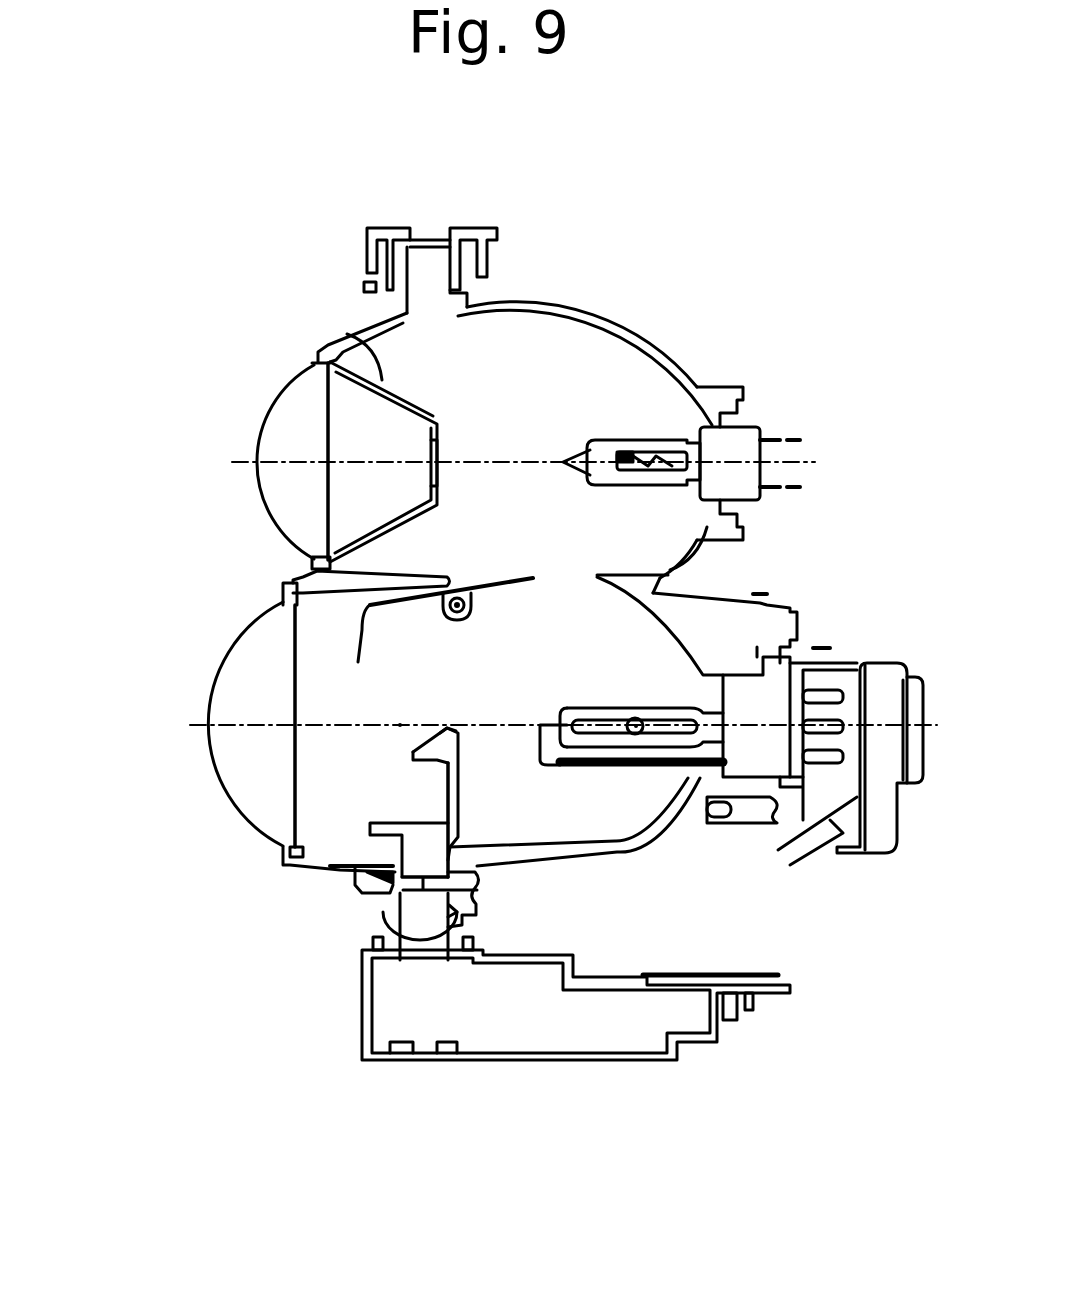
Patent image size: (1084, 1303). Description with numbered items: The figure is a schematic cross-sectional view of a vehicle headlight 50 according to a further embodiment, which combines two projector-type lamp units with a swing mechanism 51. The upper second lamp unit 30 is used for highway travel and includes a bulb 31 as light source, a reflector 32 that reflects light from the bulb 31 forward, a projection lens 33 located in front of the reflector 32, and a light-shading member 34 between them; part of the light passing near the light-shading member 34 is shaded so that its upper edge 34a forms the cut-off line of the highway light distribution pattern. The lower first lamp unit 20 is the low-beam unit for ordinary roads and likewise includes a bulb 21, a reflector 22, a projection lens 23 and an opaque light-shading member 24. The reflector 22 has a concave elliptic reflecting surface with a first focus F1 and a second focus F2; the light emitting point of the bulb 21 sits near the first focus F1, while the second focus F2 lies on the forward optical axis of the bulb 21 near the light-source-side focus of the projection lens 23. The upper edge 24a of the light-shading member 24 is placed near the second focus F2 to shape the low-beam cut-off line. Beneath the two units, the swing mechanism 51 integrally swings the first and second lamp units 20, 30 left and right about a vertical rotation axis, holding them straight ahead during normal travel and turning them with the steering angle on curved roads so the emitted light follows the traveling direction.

The vehicle headlight 50 is at (792, 200).
The second lamp unit 30 is at (623, 313).
The bulb 31 is at (640, 447).
The reflector 32 is at (663, 342).
The projection lens 33 is at (262, 430).
The light-shading member 34 is at (355, 345).
The upper edge 34a is at (432, 463).
The first lamp unit 20 is at (707, 838).
The bulb 21 is at (667, 715).
The reflector 22 is at (613, 850).
The projection lens 23 is at (222, 667).
The light-shading member 24 is at (450, 782).
The upper edge 24a is at (453, 728).
The swing mechanism 51 is at (497, 1038).
The first focus F1 is at (640, 712).
The second focus F2 is at (400, 722).